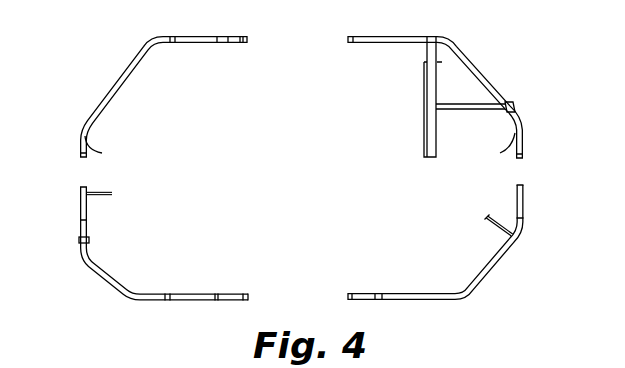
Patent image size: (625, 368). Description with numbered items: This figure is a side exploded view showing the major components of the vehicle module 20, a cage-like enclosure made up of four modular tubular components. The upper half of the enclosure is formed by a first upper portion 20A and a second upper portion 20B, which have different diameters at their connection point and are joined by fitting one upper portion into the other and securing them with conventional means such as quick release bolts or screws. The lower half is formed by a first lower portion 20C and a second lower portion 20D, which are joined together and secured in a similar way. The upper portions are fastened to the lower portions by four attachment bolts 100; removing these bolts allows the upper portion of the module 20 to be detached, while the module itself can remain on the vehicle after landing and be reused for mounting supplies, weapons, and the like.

The vehicle module 20 is at (552, 176).
The first upper portion 20A is at (125, 64).
The second upper portion 20B is at (467, 52).
The first lower portion 20C is at (105, 287).
The second lower portion 20D is at (505, 255).
The attachment bolts 100 is at (136, 198).